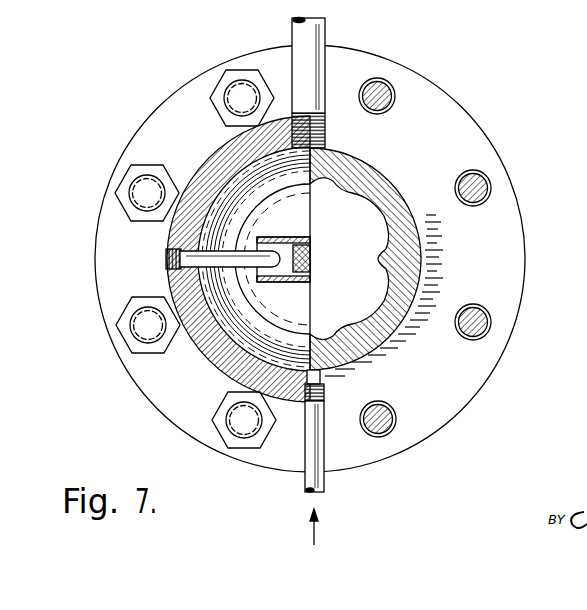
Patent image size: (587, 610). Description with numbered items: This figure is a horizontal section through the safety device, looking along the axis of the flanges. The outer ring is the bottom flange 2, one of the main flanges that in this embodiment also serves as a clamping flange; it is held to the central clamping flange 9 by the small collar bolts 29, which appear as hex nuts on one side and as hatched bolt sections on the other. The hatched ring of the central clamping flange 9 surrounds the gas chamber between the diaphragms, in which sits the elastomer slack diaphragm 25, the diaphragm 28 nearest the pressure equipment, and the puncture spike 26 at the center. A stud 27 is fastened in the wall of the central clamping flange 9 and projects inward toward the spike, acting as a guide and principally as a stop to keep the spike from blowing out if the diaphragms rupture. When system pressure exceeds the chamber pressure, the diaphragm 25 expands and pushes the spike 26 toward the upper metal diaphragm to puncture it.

The bottom flange 2 is at (460, 103).
The central clamping flange 9 is at (197, 348).
The elastomer slack diaphragm 25 is at (293, 198).
The puncture spike 26 is at (310, 257).
The stud 27 is at (197, 255).
The diaphragm 28 is at (293, 297).
The small collar bolt 29 is at (215, 95).